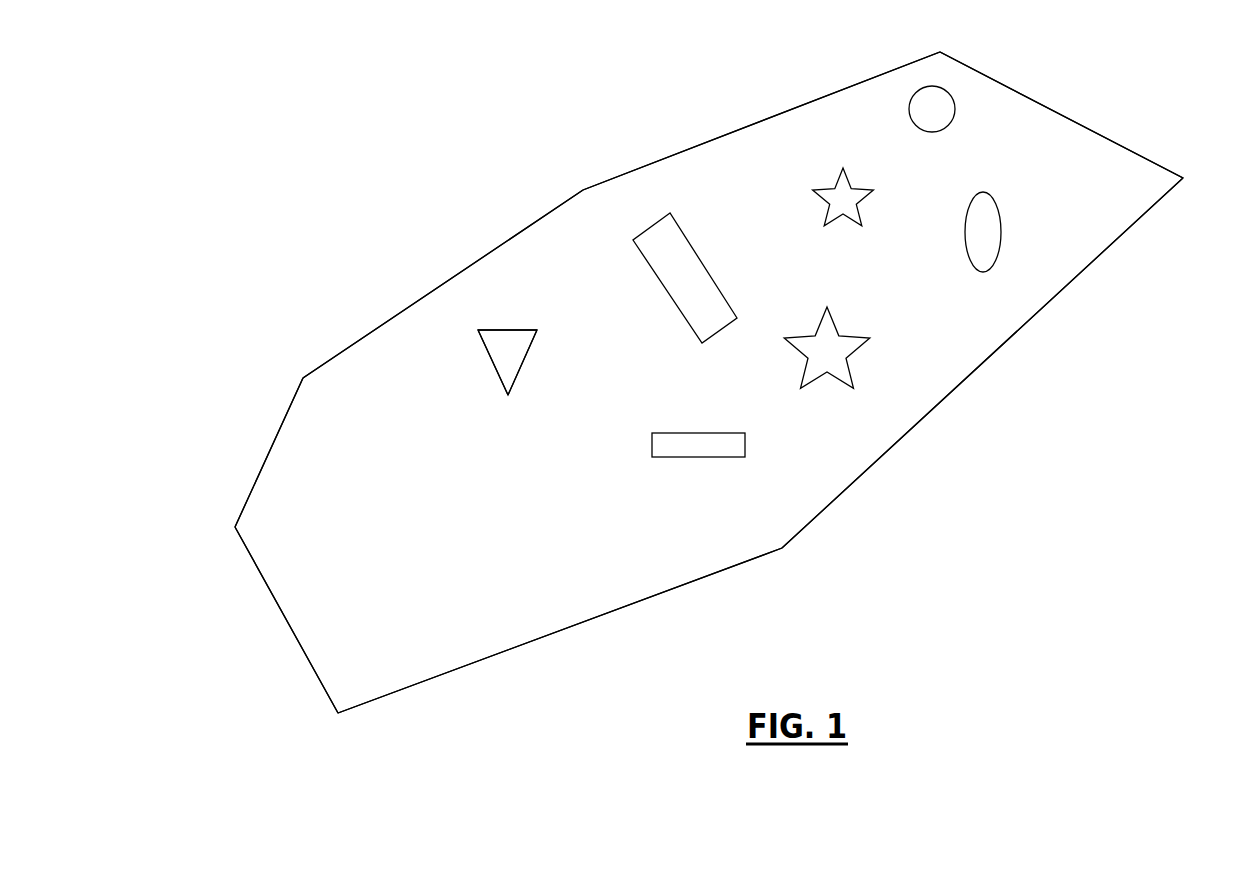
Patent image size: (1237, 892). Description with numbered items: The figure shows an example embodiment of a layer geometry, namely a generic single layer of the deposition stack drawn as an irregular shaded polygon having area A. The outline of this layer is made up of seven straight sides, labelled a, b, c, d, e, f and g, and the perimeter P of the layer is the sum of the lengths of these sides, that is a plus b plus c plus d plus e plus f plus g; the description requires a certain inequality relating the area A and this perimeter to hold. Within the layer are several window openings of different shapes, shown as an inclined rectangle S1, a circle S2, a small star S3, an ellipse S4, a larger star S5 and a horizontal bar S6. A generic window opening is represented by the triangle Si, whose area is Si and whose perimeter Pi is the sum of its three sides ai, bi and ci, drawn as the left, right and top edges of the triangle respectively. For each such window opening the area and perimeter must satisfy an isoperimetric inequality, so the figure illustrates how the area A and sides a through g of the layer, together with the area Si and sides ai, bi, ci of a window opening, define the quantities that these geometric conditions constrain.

The area of a generic single layer A is at (709, 382).
The perimeter side a of the layer a is at (286, 620).
The perimeter side b of the layer b is at (560, 630).
The perimeter side c of the layer c is at (982, 363).
The perimeter side d of the layer d is at (1061, 115).
The perimeter side e of the layer e is at (761, 121).
The perimeter side f of the layer f is at (443, 284).
The perimeter side g of the layer g is at (269, 452).
The window opening S1 is at (684, 278).
The window opening S2 is at (951, 119).
The window opening S3 is at (835, 184).
The window opening S4 is at (1002, 235).
The window opening S5 is at (837, 351).
The window opening S6 is at (698, 465).
The generic window opening Si is at (507, 384).
The side ai of the generic window opening ai is at (481, 362).
The side bi of the generic window opening bi is at (536, 362).
The side ci of the generic window opening ci is at (507, 306).